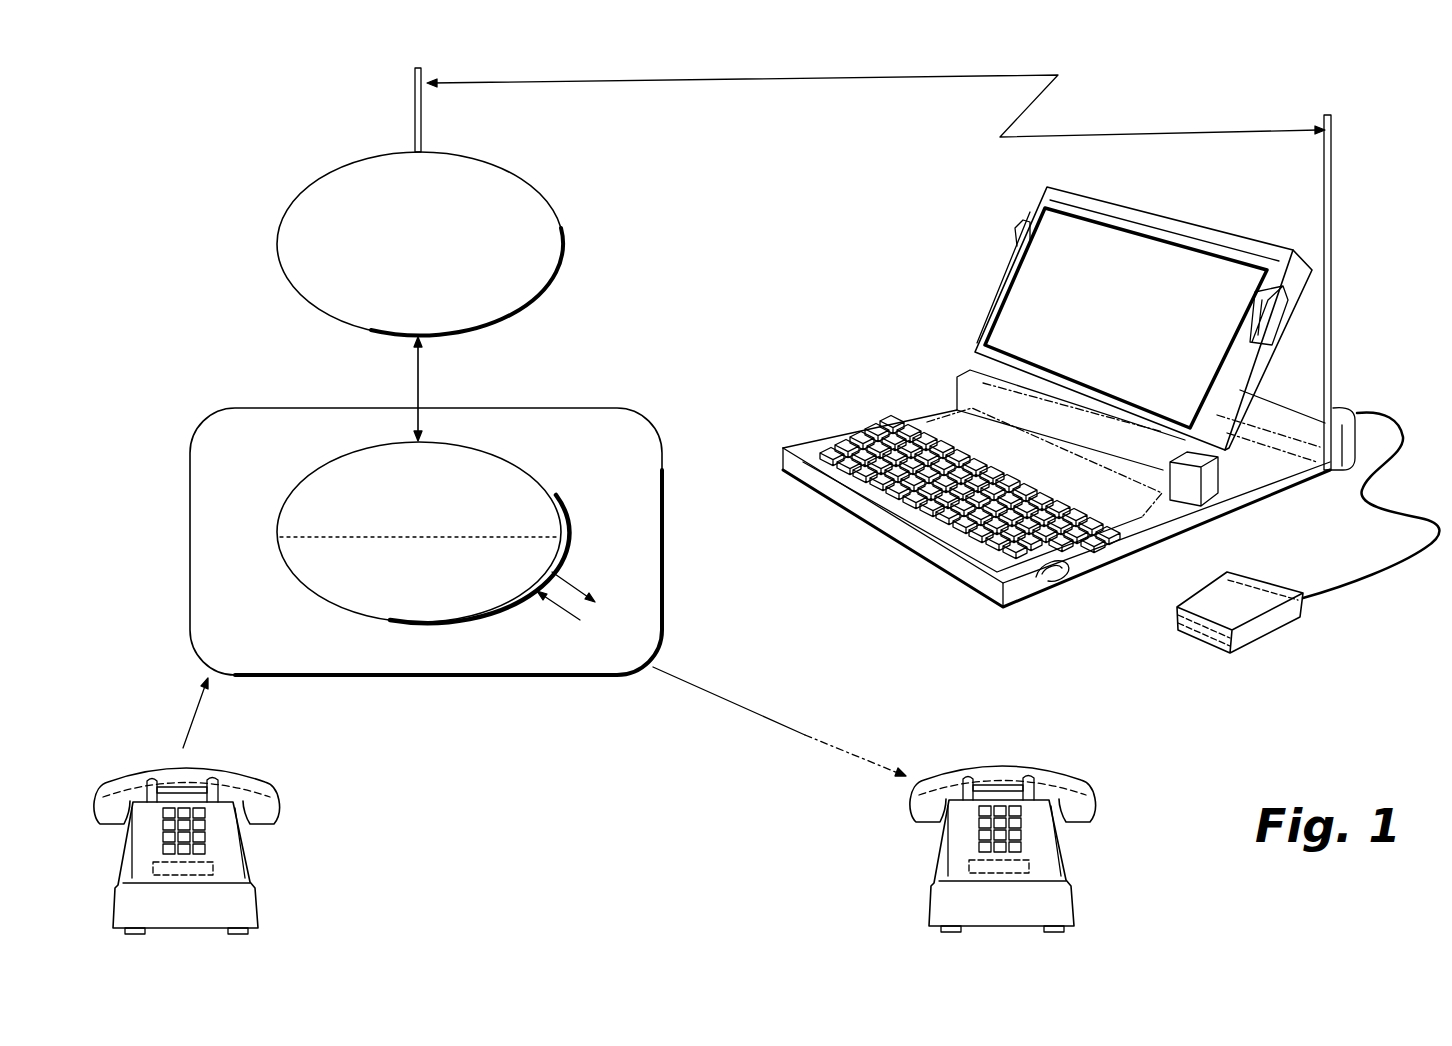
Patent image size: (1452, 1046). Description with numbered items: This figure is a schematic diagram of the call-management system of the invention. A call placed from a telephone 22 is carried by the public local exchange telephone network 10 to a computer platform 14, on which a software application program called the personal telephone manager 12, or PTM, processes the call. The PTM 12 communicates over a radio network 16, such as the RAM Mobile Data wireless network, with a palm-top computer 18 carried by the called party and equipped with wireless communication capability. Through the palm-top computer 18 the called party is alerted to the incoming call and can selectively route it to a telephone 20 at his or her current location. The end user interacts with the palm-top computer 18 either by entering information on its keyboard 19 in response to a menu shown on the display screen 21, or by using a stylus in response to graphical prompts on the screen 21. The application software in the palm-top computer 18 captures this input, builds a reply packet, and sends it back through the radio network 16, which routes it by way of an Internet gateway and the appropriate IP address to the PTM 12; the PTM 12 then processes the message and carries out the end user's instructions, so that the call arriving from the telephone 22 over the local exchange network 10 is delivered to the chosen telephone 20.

The public local exchange telephone network 10 is at (584, 673).
The personal telephone manager 12 is at (543, 478).
The computer platform 14 is at (282, 555).
The radio network 16 is at (307, 185).
The palm-top computer 18 is at (1111, 384).
The keyboard 19 is at (878, 430).
The telephone 20 is at (1077, 775).
The display screen 21 is at (1023, 287).
The telephone 22 is at (270, 787).